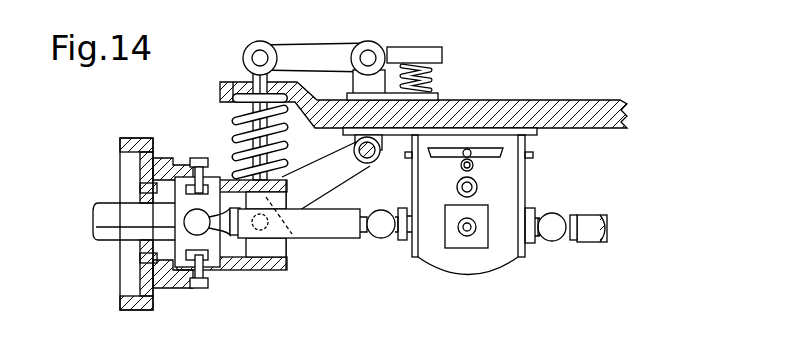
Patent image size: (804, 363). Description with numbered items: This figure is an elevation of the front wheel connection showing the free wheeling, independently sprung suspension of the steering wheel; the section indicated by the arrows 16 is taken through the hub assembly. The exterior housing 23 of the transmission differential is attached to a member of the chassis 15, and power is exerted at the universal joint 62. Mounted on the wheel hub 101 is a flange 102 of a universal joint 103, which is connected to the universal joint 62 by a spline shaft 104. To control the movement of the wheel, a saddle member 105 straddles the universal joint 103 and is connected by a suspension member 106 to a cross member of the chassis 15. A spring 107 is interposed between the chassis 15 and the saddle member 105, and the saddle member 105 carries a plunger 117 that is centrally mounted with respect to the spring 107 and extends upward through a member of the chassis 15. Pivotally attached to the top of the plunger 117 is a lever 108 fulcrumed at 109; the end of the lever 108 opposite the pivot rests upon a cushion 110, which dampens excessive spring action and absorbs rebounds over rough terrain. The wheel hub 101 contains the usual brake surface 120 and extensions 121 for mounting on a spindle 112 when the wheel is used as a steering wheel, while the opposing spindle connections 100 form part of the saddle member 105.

The chassis 15 is at (522, 102).
The exterior housing 23 is at (470, 262).
The universal joint 62 is at (383, 240).
The spindle connections 100 is at (220, 272).
The wheel hub 101 is at (132, 146).
The flange 102 is at (176, 284).
The universal joint 103 is at (222, 172).
The spline shaft 104 is at (305, 240).
The saddle member 105 is at (231, 272).
The suspension member 106 is at (334, 172).
The spring 107 is at (278, 142).
The lever 108 is at (317, 53).
The fulcrum 109 is at (371, 55).
The cushion 110 is at (433, 75).
The spindle 112 is at (200, 158).
The plunger 117 is at (250, 72).
The brake surface 120 is at (120, 293).
The extensions 121 is at (178, 160).
The section line 16 is at (68, 220).